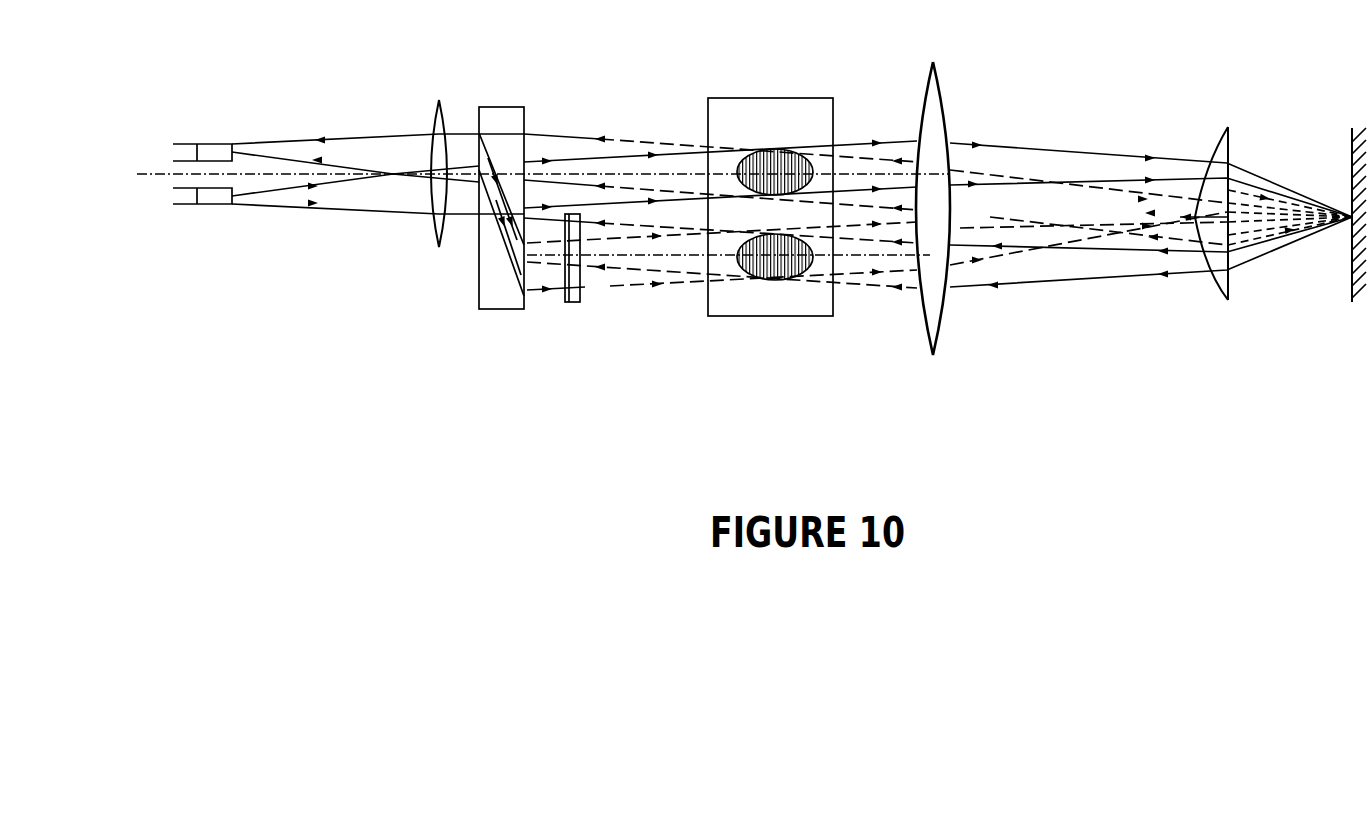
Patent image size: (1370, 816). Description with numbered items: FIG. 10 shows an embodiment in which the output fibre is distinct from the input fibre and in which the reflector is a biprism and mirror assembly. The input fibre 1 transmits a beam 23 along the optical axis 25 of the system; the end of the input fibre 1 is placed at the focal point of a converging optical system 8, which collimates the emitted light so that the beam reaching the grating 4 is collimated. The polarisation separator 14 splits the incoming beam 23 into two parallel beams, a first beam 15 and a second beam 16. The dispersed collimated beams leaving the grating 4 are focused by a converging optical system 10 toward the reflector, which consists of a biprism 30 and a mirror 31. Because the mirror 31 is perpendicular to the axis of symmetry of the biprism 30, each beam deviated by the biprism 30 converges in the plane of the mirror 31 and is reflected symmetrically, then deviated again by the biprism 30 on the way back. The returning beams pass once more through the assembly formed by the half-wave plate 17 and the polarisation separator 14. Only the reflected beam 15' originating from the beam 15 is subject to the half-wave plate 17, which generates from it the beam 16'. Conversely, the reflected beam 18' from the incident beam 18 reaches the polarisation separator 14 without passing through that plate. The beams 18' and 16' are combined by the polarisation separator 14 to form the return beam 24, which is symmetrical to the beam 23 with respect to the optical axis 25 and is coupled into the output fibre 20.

The input fibre 1 is at (195, 197).
The output fibre 20 is at (205, 150).
The optical axis 25 is at (151, 170).
The return beam 24 is at (350, 153).
The transmitted beam 23 is at (367, 193).
The converging optical system 8 is at (438, 145).
The polarisation separator 14 is at (488, 290).
The second split beam 16 is at (504, 253).
The converted return beam 16' is at (526, 291).
The half-wave plate 17 is at (568, 302).
The incident beam 18 is at (938, 217).
The reflected beam from incident beam 18' is at (938, 187).
The grating 4 is at (805, 117).
The converging optical system 10 is at (935, 325).
The first split beam 15 is at (1151, 152).
The reflected beam from first split beam 15' is at (1151, 283).
The biprism 30 is at (1230, 290).
The mirror 31 is at (1350, 290).